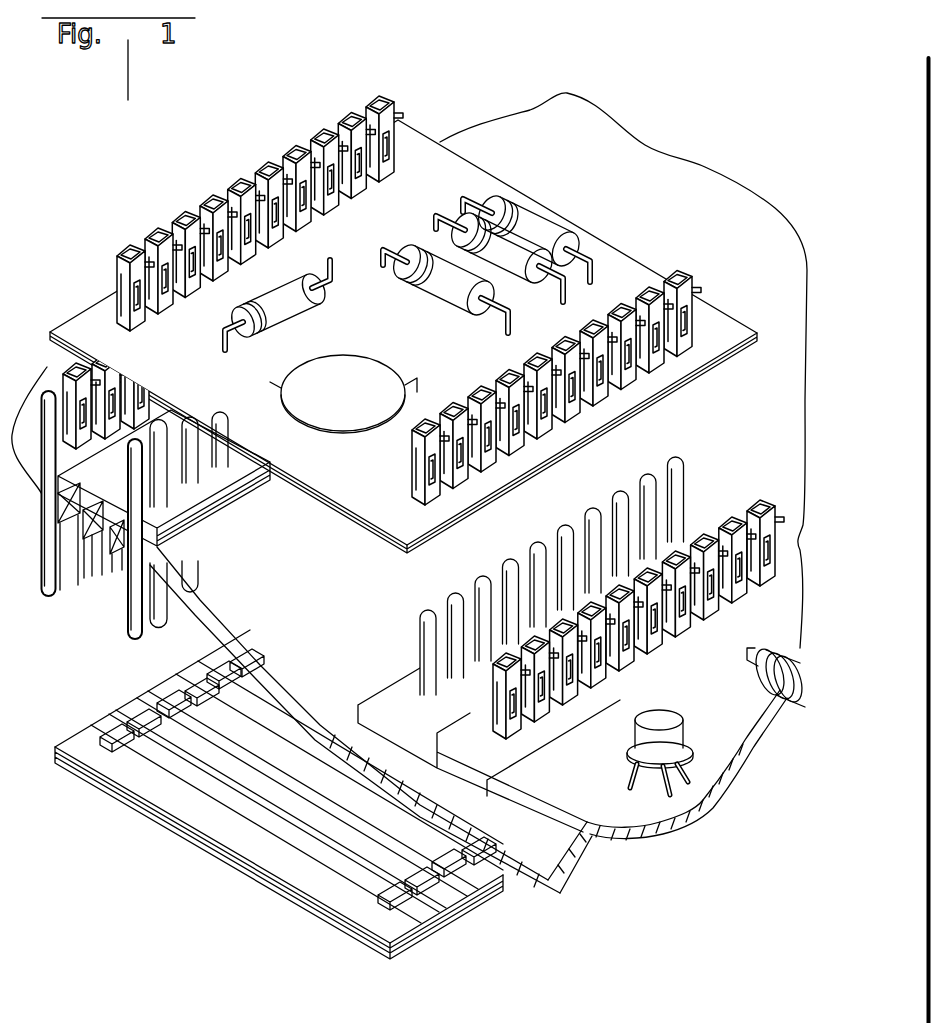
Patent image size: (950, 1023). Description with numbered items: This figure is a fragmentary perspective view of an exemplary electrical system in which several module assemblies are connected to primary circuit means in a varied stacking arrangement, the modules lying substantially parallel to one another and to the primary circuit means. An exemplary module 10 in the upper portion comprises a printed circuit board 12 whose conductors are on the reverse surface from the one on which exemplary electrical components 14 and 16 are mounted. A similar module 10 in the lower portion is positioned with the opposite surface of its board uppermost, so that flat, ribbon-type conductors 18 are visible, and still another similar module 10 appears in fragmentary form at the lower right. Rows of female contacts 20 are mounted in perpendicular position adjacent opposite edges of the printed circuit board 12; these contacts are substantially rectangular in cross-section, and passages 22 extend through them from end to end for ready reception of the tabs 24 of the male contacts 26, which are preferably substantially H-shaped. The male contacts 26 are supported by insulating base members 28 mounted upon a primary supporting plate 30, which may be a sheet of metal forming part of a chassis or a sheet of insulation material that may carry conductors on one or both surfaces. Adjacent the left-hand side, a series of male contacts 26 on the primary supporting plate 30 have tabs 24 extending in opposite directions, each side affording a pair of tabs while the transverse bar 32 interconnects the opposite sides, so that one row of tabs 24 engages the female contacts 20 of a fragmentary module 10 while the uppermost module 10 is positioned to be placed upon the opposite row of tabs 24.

The module 10 is at (406, 532).
The printed circuit board 12 is at (408, 526).
The electrical component 14 is at (530, 226).
The electrical component 16 is at (372, 385).
The flat ribbon-type conductors 18 is at (263, 785).
The female contact 20 is at (290, 165).
The passage 22 is at (200, 222).
The tab 24 is at (185, 473).
The male contact 26 is at (105, 560).
The insulating base member 28 is at (245, 492).
The primary supporting plate 30 is at (302, 594).
The transverse bar 32 is at (58, 522).